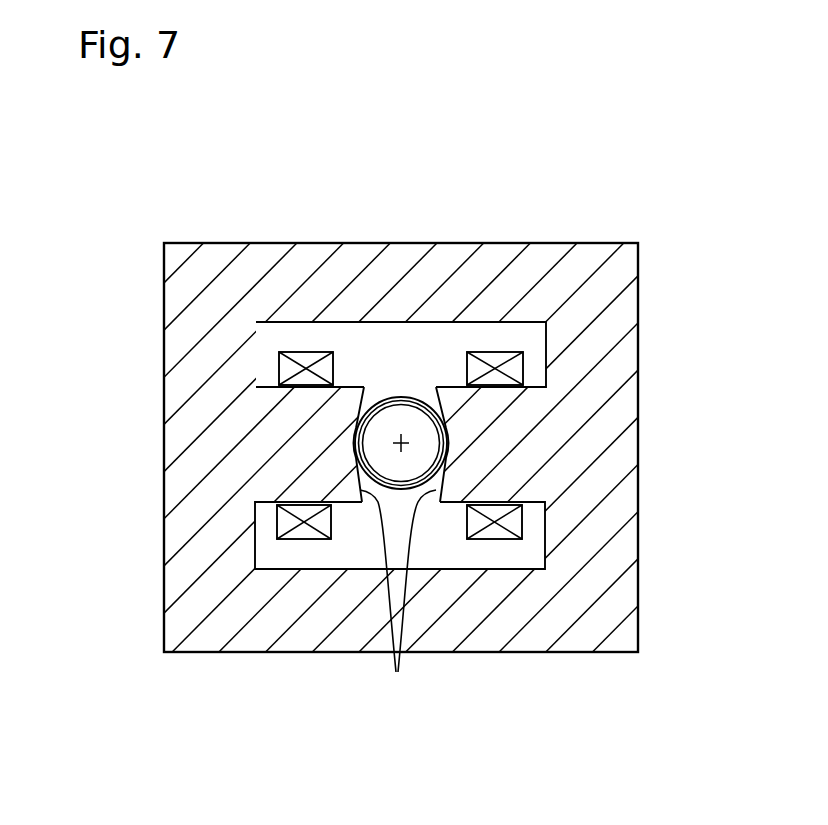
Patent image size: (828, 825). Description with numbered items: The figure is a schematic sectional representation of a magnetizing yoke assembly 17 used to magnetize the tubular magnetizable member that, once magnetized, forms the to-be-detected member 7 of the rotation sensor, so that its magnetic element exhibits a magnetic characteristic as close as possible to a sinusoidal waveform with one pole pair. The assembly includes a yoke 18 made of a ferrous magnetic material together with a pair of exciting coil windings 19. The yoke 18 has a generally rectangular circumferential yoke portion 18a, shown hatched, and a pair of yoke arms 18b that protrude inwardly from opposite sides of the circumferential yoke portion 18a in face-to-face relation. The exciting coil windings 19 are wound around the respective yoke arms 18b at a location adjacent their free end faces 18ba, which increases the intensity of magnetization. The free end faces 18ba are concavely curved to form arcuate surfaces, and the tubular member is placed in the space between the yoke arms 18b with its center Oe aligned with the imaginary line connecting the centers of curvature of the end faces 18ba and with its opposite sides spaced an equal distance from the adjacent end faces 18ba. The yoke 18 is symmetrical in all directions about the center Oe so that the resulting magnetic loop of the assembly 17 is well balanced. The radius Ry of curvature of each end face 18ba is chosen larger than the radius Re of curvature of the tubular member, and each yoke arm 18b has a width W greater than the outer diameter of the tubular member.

The to-be-detected member 7 is at (400, 441).
The magnetizing yoke assembly 17 is at (178, 233).
The yoke 18 is at (165, 445).
The circumferential yoke portion 18a is at (197, 560).
The yoke arms 18b is at (347, 397).
The free end faces 18ba is at (398, 598).
The exciting coil windings 19 is at (302, 351).
The width of yoke arm W is at (534, 389).
The radius of curvature of tubular magnetizable member Re is at (394, 398).
The radius of curvature of arm end face Ry is at (401, 443).
The center of tubular magnetizable member Oe is at (389, 459).